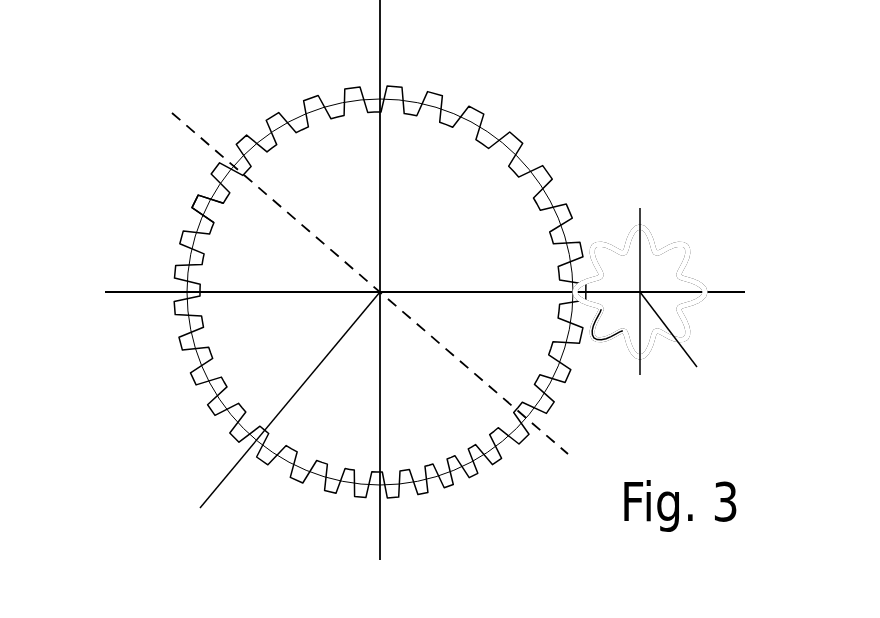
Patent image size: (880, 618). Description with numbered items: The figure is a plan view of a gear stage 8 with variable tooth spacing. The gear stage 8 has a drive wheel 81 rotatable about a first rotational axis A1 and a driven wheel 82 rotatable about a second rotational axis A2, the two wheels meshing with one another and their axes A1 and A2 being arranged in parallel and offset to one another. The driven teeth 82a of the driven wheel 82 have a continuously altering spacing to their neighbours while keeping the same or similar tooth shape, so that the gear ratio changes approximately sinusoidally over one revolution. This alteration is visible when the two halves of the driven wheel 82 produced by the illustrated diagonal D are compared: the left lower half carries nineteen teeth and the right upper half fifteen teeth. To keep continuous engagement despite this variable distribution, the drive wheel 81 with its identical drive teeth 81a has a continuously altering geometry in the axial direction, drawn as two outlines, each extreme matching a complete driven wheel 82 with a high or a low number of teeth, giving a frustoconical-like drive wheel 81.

The gear stage 8 is at (416, 280).
The driven wheel 82 is at (353, 280).
The driven teeth 82a is at (190, 205).
The drive wheel 81 is at (656, 303).
The drive teeth 81a is at (613, 330).
The first rotational axis A1 is at (687, 351).
The second rotational axis A2 is at (280, 422).
The diagonal D is at (545, 435).